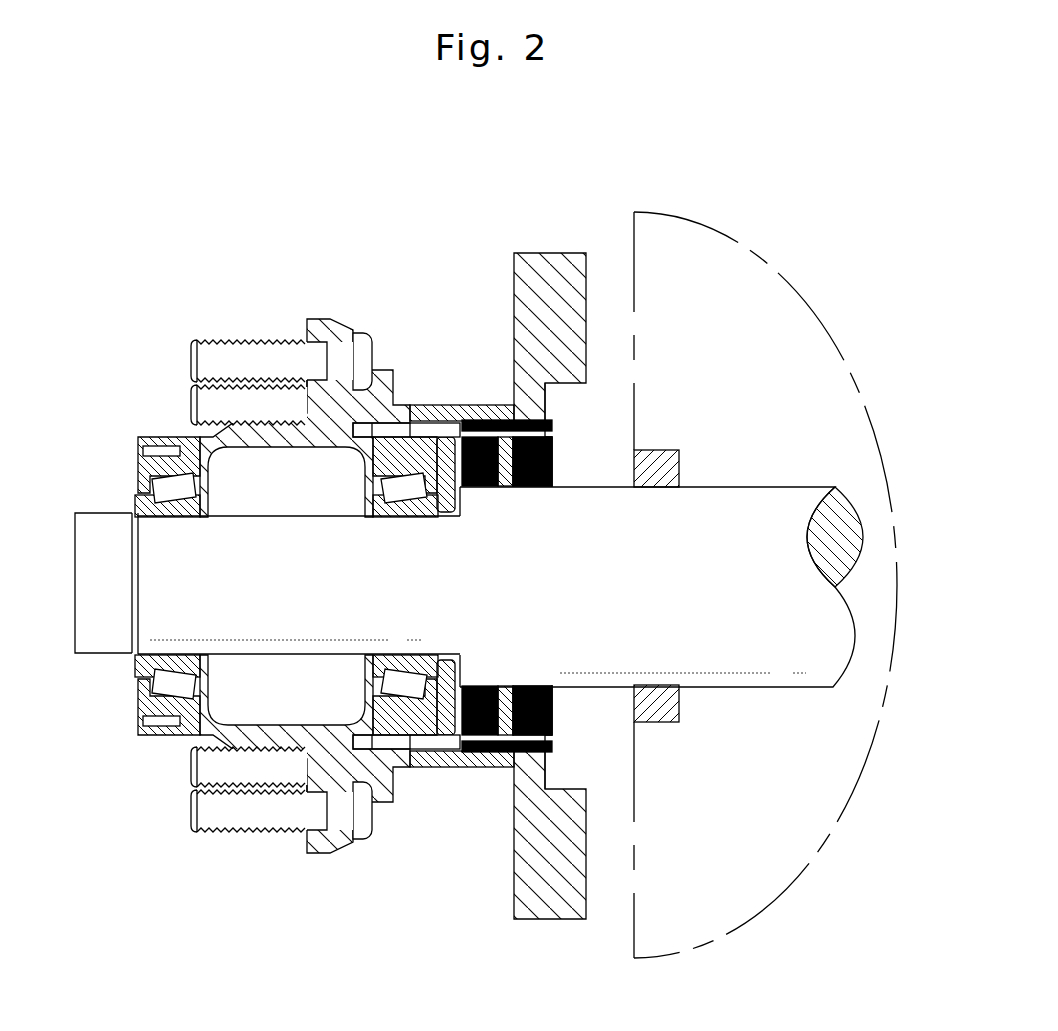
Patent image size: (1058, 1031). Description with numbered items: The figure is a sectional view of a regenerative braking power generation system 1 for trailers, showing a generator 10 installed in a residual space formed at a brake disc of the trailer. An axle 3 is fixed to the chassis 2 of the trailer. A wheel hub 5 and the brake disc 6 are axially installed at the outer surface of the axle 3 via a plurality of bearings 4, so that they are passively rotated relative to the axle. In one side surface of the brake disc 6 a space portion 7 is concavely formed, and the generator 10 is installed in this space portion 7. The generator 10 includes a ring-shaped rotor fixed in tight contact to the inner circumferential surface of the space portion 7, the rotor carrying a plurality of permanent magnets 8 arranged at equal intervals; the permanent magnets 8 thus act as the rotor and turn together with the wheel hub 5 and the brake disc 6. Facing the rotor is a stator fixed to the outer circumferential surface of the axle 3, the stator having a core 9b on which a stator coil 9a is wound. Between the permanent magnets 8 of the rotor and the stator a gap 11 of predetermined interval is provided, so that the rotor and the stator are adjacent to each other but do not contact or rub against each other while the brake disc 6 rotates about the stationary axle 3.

The regenerative braking power generation system 1 is at (105, 275).
The chassis 2 is at (787, 325).
The axle 3 is at (833, 640).
The bearings 4 is at (408, 490).
The wheel hub 5 is at (322, 317).
The brake disc 6 is at (551, 290).
The space portion 7 is at (562, 737).
The permanent magnet 8 is at (486, 428).
The stator coil 9a is at (475, 489).
The core 9b is at (535, 490).
The generator 10 is at (512, 534).
The gap 11 is at (548, 432).